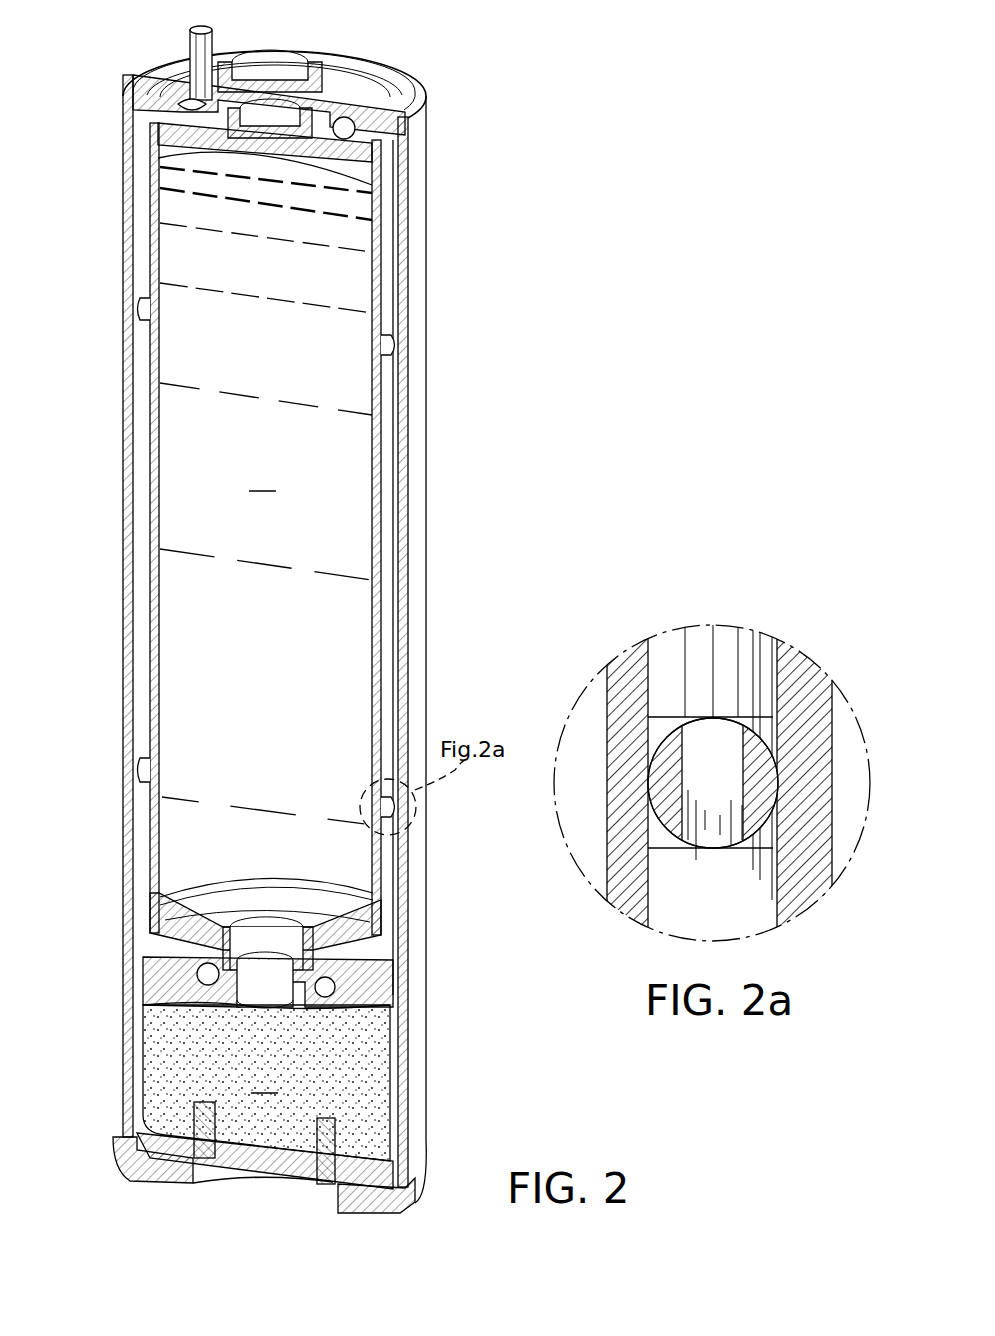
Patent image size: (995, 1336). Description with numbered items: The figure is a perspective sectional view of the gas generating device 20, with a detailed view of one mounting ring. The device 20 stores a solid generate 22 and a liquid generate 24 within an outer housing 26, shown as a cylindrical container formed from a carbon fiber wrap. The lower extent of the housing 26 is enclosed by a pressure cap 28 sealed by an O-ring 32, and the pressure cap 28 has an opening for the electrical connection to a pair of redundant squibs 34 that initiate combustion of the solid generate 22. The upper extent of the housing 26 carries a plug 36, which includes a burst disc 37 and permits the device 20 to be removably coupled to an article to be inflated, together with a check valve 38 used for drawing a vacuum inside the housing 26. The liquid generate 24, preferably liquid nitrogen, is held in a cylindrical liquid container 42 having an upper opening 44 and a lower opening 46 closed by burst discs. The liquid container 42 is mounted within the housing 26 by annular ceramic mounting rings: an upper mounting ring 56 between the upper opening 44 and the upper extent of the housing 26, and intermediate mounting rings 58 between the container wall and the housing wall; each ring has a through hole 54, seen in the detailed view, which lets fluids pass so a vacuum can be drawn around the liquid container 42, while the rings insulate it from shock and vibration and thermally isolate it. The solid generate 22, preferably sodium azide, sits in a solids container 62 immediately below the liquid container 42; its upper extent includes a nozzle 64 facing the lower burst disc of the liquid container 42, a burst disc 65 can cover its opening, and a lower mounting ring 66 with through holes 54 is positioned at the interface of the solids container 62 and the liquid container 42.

In FIG. 2, the device 20 is at (540, 283).
In FIG. 2, the solid generate 22 is at (266, 1081).
In FIG. 2, the liquid generate 24 is at (266, 496).
In FIG. 2, the outer housing 26 is at (140, 489).
In FIG. 2, the pressure cap 28 is at (150, 1170).
In FIG. 2, the O-ring 32 is at (390, 1198).
In FIG. 2, the redundant squibs 34 is at (330, 1142).
In FIG. 2, the plug 36 is at (285, 82).
In FIG. 2, the burst disc 37 is at (270, 75).
In FIG. 2, the check valve 38 is at (190, 42).
In FIG. 2, the liquid container 42 is at (155, 406).
In FIG. 2, the upper opening 44 is at (388, 138).
In FIG. 2, the lower opening 46 is at (280, 945).
In FIG. 2a, the through hole 54 is at (712, 758).
In FIG. 2, the upper mounting ring 56 is at (165, 112).
In FIG. 2, the intermediate mounting rings 58 is at (140, 306).
In FIG. 2a, the intermediate mounting rings 58 is at (765, 770).
In FIG. 2, the solids container 62 is at (355, 1057).
In FIG. 2, the nozzle 64 is at (330, 986).
In FIG. 2, the burst disc 65 is at (270, 990).
In FIG. 2, the lower mounting ring 66 is at (200, 975).